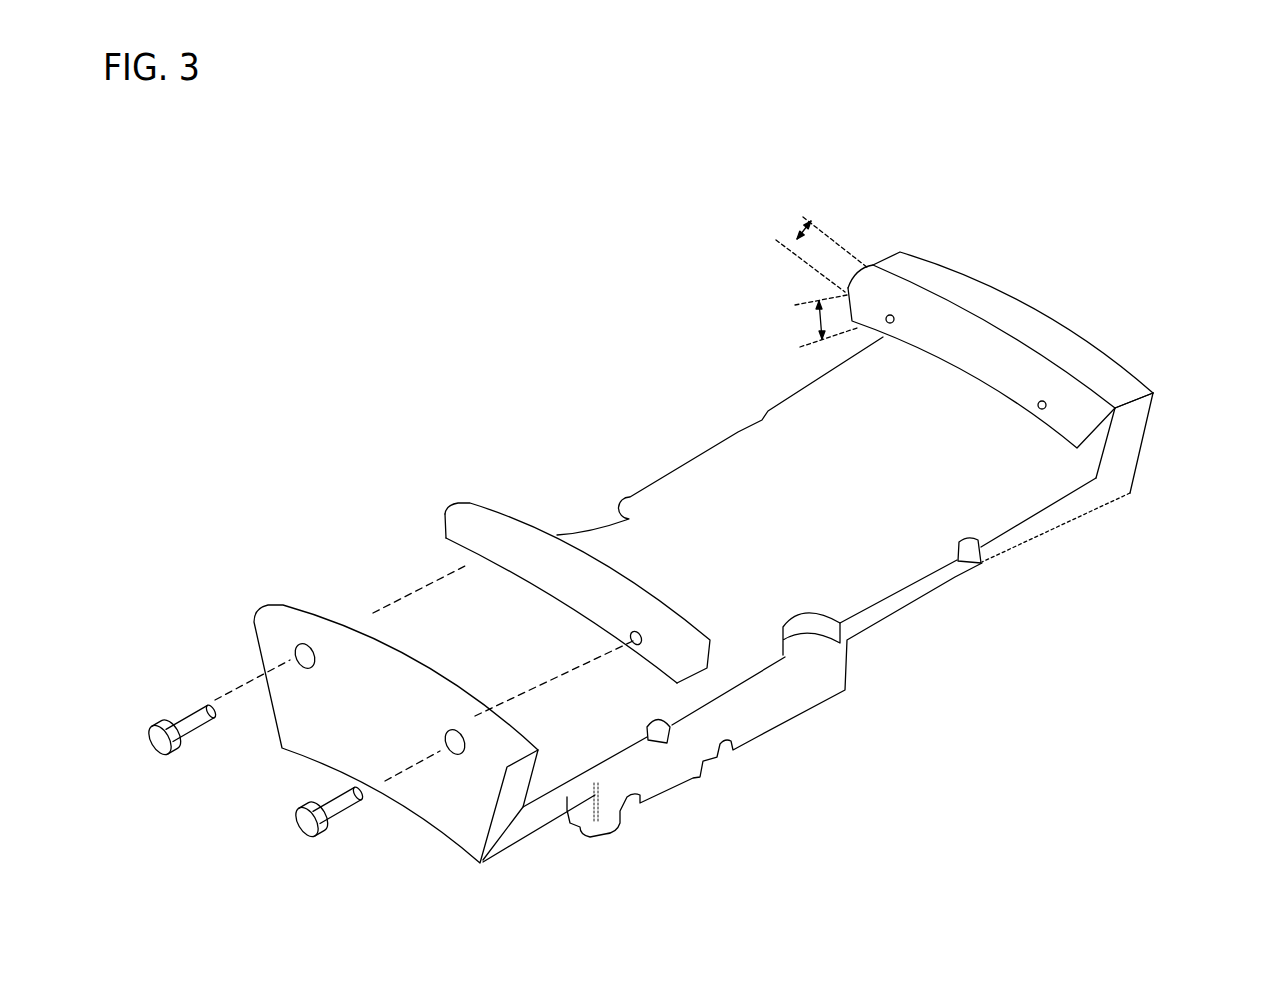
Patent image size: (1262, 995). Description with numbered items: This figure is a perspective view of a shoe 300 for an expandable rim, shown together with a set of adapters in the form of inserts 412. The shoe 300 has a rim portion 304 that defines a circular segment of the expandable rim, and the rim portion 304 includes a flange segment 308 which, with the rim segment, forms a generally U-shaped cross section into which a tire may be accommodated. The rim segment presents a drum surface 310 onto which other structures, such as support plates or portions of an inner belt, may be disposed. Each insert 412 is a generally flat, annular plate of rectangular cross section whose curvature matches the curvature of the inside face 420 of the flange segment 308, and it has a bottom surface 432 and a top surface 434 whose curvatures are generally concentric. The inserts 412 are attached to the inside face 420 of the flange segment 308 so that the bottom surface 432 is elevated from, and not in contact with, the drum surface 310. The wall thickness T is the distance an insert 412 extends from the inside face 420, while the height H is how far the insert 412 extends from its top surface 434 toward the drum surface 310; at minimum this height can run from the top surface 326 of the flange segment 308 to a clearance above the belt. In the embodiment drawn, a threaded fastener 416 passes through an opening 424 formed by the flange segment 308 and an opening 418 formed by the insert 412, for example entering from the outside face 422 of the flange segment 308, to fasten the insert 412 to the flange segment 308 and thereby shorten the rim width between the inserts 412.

The shoe 300 is at (250, 365).
The rim portion 304 is at (674, 475).
The flange segment 308 is at (1136, 463).
The drum surface 310 is at (795, 434).
The top surface of the flange segment 326 is at (949, 283).
The insert 412 is at (510, 517).
The threaded fastener 416 is at (178, 703).
The opening of the insert 418 is at (483, 549).
The inside face of the flange segment 420 is at (1101, 468).
The outside face of the flange segment 422 is at (321, 736).
The opening of the flange segment 424 is at (290, 652).
The bottom surface of the insert 432 is at (995, 405).
The top surface of the insert 434 is at (1085, 405).